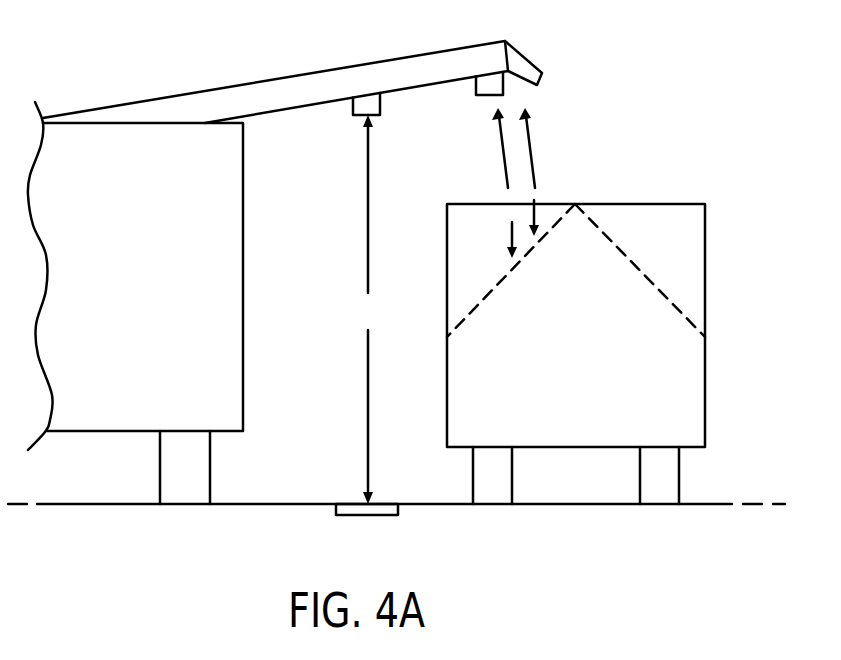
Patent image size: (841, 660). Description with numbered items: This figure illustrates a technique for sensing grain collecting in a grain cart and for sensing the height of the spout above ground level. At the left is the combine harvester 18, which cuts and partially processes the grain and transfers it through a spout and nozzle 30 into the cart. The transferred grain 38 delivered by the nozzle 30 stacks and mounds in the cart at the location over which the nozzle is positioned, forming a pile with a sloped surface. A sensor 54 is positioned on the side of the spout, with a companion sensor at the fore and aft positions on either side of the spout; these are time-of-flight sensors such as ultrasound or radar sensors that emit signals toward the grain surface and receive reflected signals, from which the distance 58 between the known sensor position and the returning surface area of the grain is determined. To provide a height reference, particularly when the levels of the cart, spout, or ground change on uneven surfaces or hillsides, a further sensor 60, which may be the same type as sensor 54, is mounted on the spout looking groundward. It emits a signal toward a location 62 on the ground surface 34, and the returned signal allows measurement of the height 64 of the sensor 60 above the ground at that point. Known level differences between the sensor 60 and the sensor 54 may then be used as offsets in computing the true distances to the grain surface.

The combine harvester 18 is at (220, 190).
The transferred grain 38 is at (298, 90).
The sensor 60 is at (368, 107).
The sensor 54 is at (495, 83).
The distance 58 is at (505, 150).
The nozzle 30 is at (705, 303).
The height 64 is at (366, 309).
The ground surface 34 is at (278, 506).
The location on the ground 62 is at (365, 515).